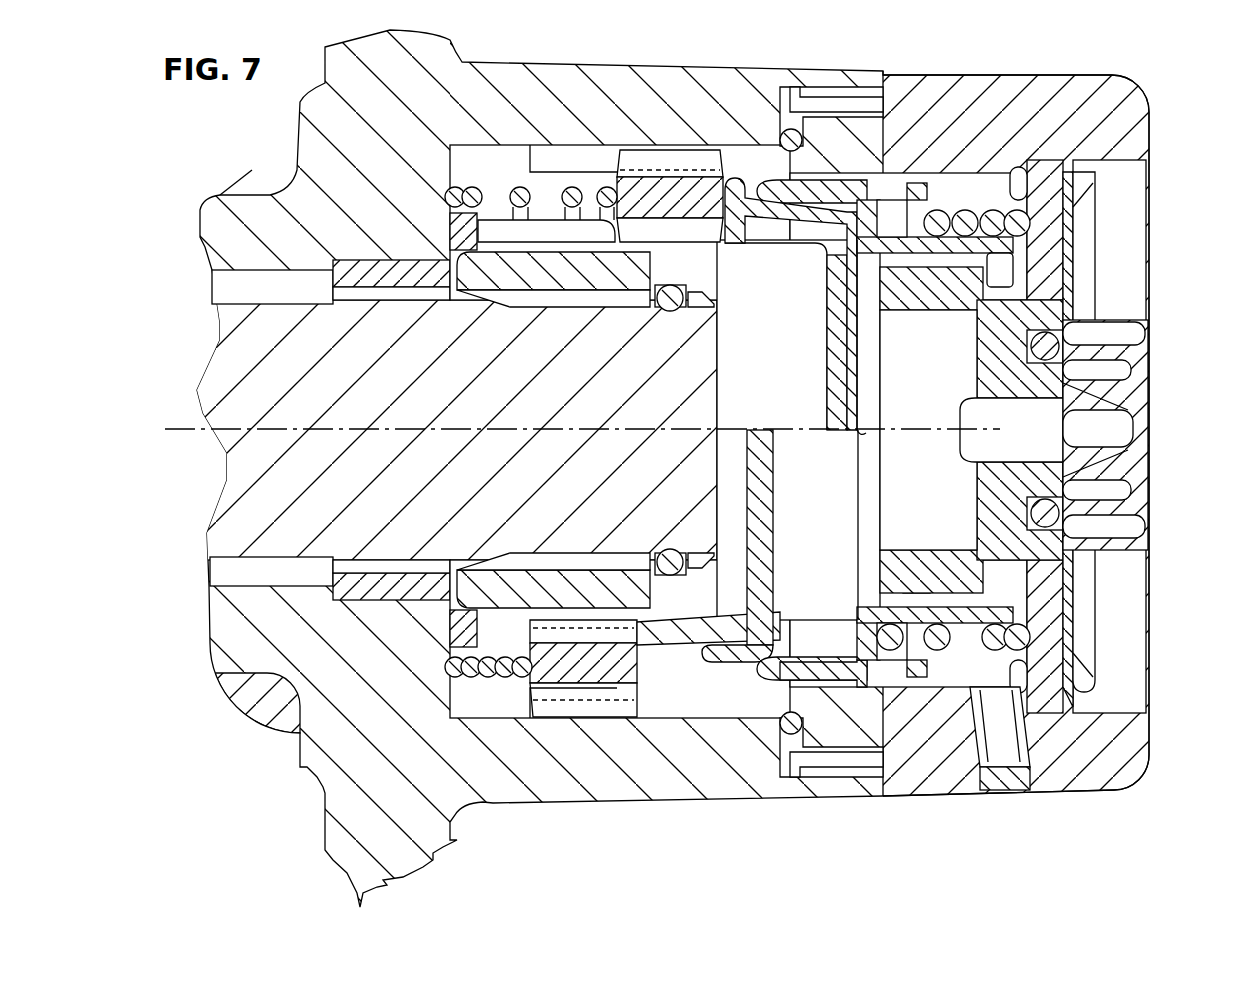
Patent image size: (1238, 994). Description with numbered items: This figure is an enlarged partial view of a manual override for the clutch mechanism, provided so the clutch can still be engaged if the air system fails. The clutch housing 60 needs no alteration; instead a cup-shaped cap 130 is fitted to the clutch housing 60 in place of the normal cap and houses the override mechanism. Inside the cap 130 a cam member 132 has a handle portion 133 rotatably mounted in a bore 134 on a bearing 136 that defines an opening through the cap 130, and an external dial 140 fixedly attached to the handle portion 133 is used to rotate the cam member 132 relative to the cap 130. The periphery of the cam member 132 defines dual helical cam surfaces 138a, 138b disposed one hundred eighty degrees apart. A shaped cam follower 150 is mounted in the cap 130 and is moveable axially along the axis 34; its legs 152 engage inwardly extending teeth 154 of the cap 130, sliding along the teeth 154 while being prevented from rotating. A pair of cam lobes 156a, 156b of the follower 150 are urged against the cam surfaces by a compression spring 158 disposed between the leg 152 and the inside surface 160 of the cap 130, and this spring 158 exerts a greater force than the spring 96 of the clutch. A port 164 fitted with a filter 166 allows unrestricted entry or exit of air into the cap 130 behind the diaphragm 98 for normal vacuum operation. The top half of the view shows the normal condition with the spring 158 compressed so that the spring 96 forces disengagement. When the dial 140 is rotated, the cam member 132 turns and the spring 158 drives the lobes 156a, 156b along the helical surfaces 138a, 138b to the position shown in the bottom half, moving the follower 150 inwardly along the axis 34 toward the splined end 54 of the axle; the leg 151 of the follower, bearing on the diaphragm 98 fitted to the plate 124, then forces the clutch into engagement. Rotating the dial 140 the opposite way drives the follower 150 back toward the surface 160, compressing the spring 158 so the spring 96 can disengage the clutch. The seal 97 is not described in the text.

The axis 34 is at (180, 427).
The splined end of the axle 54 is at (548, 494).
The clutch housing 60 is at (610, 78).
The spring 96 is at (513, 186).
The seal 97 is at (460, 168).
The diaphragm 98 is at (862, 384).
The plate 124 is at (827, 293).
The cap 130 is at (1085, 88).
The cam member 132 is at (960, 553).
The handle portion 133 is at (1040, 478).
The bore 134 is at (1063, 520).
The bearing 136 is at (1050, 345).
The helical cam surface 138a is at (1005, 308).
The helical cam surface 138b is at (903, 589).
The external dial 140 is at (1143, 350).
The cam follower 150 is at (890, 253).
The leg of the follower 151 is at (877, 215).
The legs 152 is at (917, 193).
The teeth 154 is at (893, 190).
The cam lobe 156a is at (1007, 275).
The cam lobe 156b is at (917, 575).
The compression spring 158 is at (968, 212).
The inside surface 160 is at (1012, 185).
The port 164 is at (1013, 742).
The filter 166 is at (1000, 793).